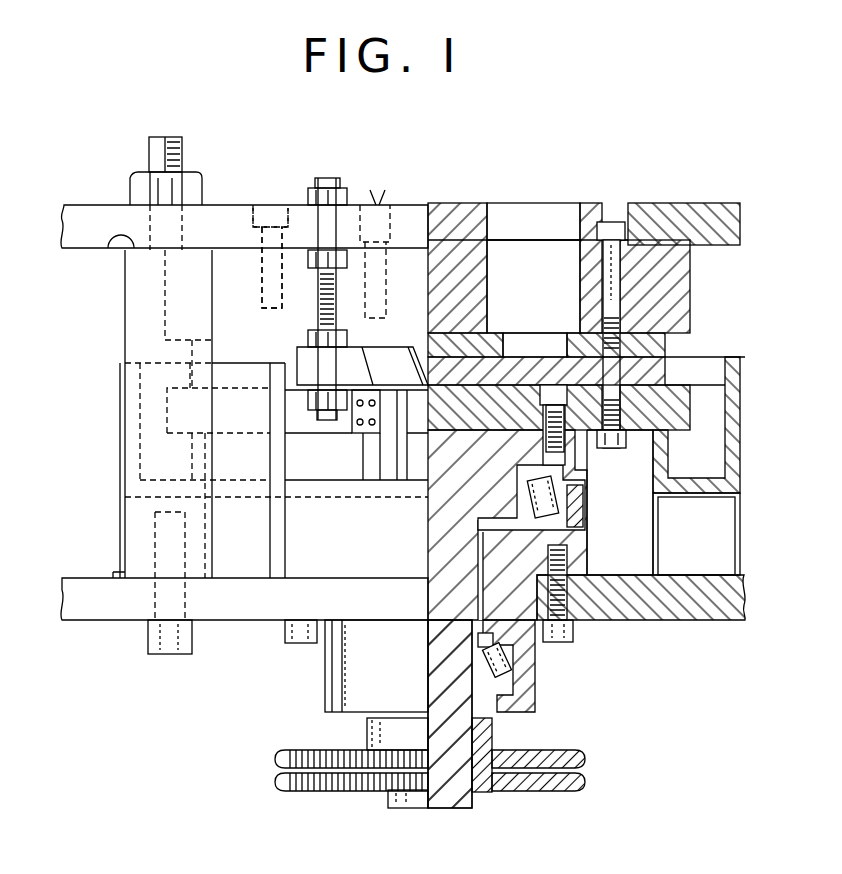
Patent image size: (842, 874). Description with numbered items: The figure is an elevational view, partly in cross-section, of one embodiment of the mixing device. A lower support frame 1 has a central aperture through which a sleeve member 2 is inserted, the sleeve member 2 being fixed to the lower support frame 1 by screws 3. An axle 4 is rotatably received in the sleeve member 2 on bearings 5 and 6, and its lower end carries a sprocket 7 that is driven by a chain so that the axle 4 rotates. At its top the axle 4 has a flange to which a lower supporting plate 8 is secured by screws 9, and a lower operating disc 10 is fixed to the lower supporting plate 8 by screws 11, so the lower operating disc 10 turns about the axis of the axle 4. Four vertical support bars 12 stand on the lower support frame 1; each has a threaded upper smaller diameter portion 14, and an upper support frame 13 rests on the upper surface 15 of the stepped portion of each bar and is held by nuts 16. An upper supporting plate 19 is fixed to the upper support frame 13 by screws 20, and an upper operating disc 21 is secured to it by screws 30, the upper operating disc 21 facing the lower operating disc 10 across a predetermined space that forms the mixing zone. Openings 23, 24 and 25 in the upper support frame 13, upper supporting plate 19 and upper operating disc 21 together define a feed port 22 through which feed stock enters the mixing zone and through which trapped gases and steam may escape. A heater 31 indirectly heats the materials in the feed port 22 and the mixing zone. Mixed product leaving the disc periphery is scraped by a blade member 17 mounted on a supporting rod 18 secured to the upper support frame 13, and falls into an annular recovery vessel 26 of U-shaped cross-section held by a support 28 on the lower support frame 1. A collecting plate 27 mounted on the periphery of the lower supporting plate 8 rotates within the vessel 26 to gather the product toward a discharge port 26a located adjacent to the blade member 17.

The lower support frame 1 is at (720, 600).
The sleeve member 2 is at (580, 552).
The screws 3 is at (574, 634).
The axle 4 is at (460, 796).
The bearing 5 is at (532, 500).
The bearing 6 is at (506, 660).
The sprocket 7 is at (548, 784).
The lower supporting plate 8 is at (458, 410).
The screws 9 is at (546, 440).
The lower operating disc 10 is at (660, 376).
The screws 11 is at (610, 450).
The support bars 12 is at (124, 330).
The upper support frame 13 is at (96, 205).
The upper smaller diameter portion 14 is at (148, 153).
The upper surface of the stepped portion 15 is at (130, 238).
The nuts 16 is at (204, 186).
The blade member 17 is at (392, 352).
The supporting rod 18 is at (316, 312).
The upper supporting plate 19 is at (690, 292).
The screws 20 is at (262, 280).
The upper operating disc 21 is at (668, 348).
The feed port 22 is at (532, 306).
The opening 23 is at (580, 222).
The opening 24 is at (580, 268).
The opening 25 is at (562, 348).
The annular recovery vessel 26 is at (120, 416).
The discharge port 26a is at (352, 556).
The collecting plate 27 is at (384, 470).
The support 28 is at (120, 530).
The screws 30 is at (618, 286).
The heater 31 is at (386, 286).